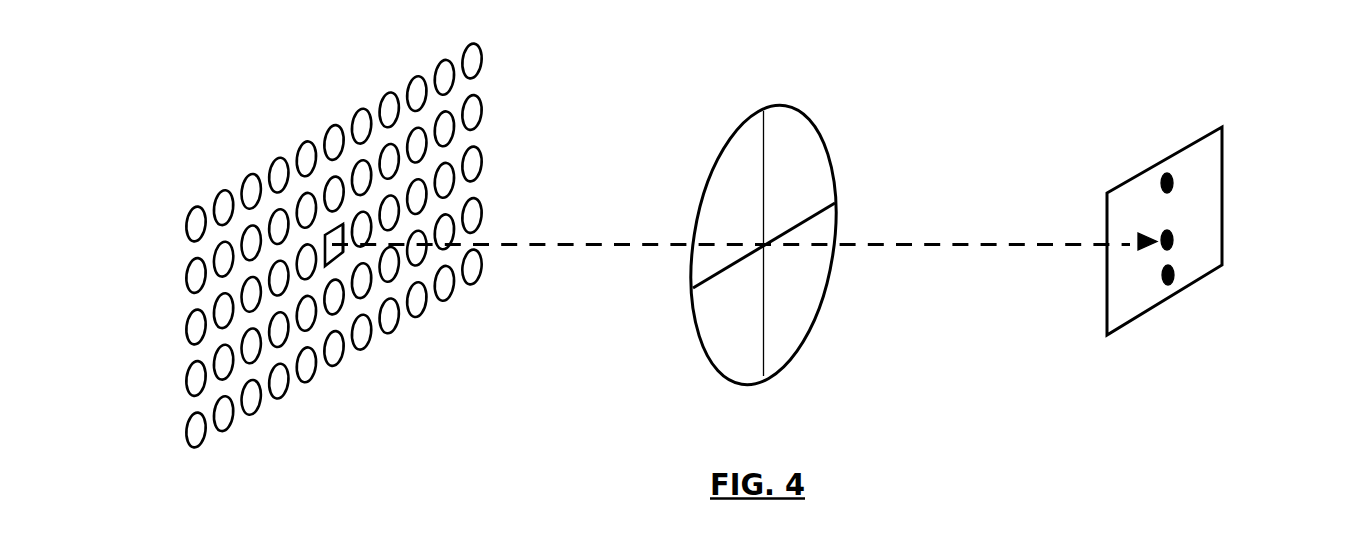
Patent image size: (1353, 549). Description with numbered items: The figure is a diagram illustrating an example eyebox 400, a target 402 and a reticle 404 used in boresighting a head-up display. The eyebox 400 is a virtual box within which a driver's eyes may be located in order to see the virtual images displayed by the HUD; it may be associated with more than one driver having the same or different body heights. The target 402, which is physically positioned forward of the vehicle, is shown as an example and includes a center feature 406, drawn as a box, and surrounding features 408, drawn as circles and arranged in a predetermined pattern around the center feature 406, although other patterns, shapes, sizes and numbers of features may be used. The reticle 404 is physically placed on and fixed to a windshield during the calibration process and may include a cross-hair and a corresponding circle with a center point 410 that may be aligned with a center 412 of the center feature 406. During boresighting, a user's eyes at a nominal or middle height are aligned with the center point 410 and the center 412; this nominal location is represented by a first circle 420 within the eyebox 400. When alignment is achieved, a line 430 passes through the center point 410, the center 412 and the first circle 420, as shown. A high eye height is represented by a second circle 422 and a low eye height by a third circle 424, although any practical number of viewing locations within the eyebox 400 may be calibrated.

The eyebox 400 is at (1121, 186).
The target 402 is at (262, 111).
The reticle 404 is at (728, 145).
The center feature 406 is at (325, 268).
The surrounding features 408 is at (189, 212).
The center point 410 is at (766, 244).
The center 412 is at (337, 256).
The first circle 420 is at (1170, 237).
The second circle 422 is at (1170, 180).
The third circle 424 is at (1172, 277).
The line 430 is at (962, 235).